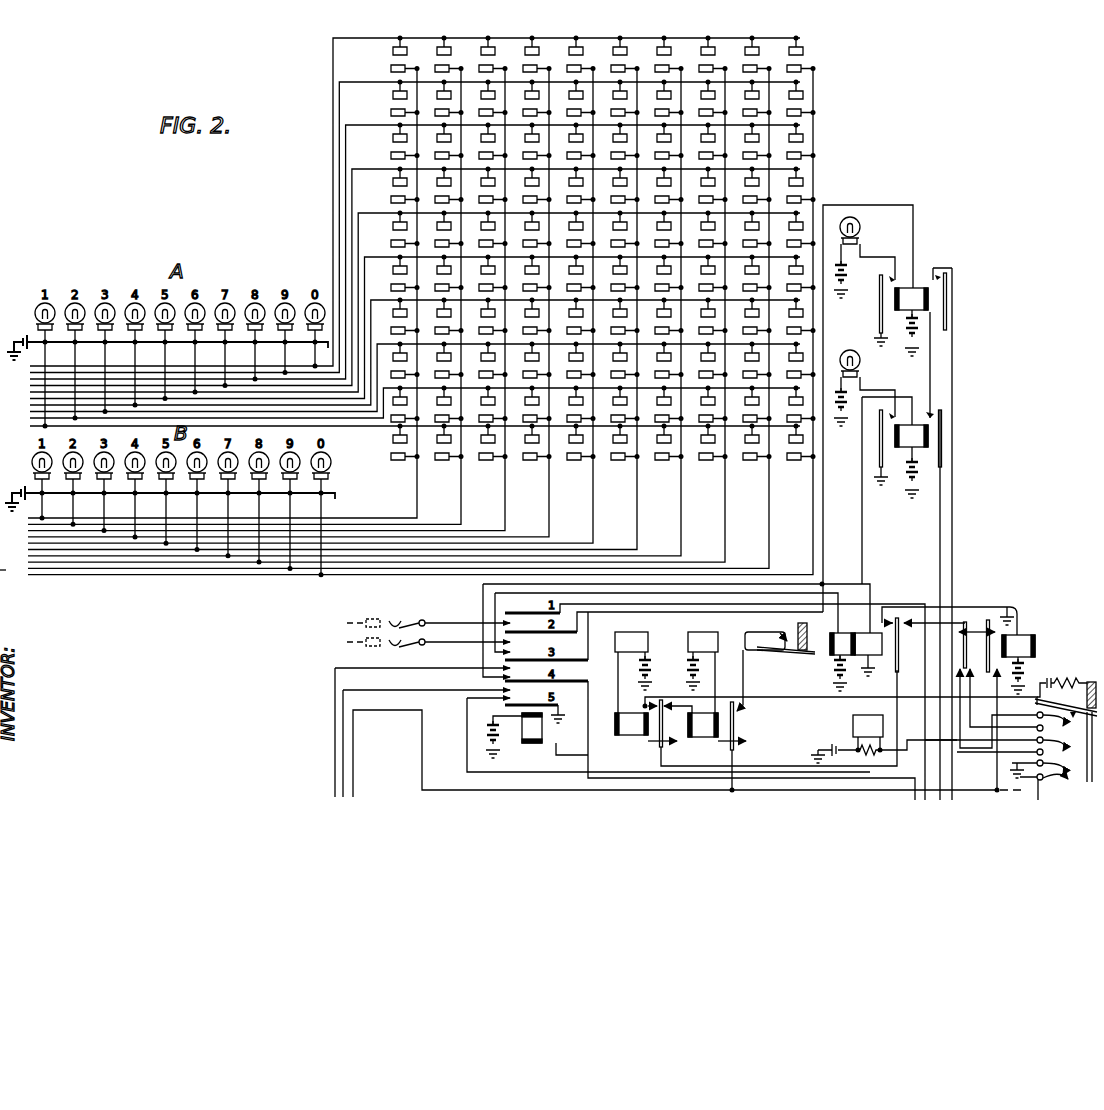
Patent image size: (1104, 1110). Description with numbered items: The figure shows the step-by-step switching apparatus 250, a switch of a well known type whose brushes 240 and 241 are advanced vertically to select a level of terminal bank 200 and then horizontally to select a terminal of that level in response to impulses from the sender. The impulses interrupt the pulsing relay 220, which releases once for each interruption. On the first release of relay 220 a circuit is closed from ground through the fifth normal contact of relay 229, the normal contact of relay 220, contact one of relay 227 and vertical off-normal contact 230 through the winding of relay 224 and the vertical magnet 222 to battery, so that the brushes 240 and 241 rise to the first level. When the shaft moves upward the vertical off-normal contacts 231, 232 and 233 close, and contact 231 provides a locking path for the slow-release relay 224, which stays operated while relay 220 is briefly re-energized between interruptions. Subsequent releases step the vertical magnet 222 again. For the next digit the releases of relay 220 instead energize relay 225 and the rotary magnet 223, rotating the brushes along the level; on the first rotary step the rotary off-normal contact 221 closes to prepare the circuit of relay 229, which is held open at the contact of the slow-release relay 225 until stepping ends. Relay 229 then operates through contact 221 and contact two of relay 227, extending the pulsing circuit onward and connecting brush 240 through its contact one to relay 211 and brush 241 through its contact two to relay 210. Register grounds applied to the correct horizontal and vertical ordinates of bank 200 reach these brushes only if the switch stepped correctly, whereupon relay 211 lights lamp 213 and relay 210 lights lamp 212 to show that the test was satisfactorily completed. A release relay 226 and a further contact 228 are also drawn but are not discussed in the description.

The terminal bank 200 is at (555, 31).
The relay 210 is at (930, 437).
The relay 211 is at (918, 288).
The lamp 212 is at (861, 357).
The lamp 213 is at (861, 223).
The relay 220 is at (845, 633).
The rotary off-normal contact 221 is at (755, 651).
The vertical magnet 222 is at (615, 648).
The rotary magnet 223 is at (689, 641).
The relay 224 is at (633, 736).
The relay 225 is at (705, 737).
The release relay 226 is at (851, 724).
The relay 227 is at (1026, 635).
The contact 228 is at (1086, 690).
The relay 229 is at (532, 743).
The vertical off-normal contact 230 is at (1036, 714).
The vertical off-normal contact 231 is at (1063, 735).
The vertical off-normal contact 232 is at (1036, 764).
The vertical off-normal contact 233 is at (996, 789).
The brush 240 is at (416, 618).
The brush 241 is at (409, 645).
The switching apparatus 250 is at (977, 700).